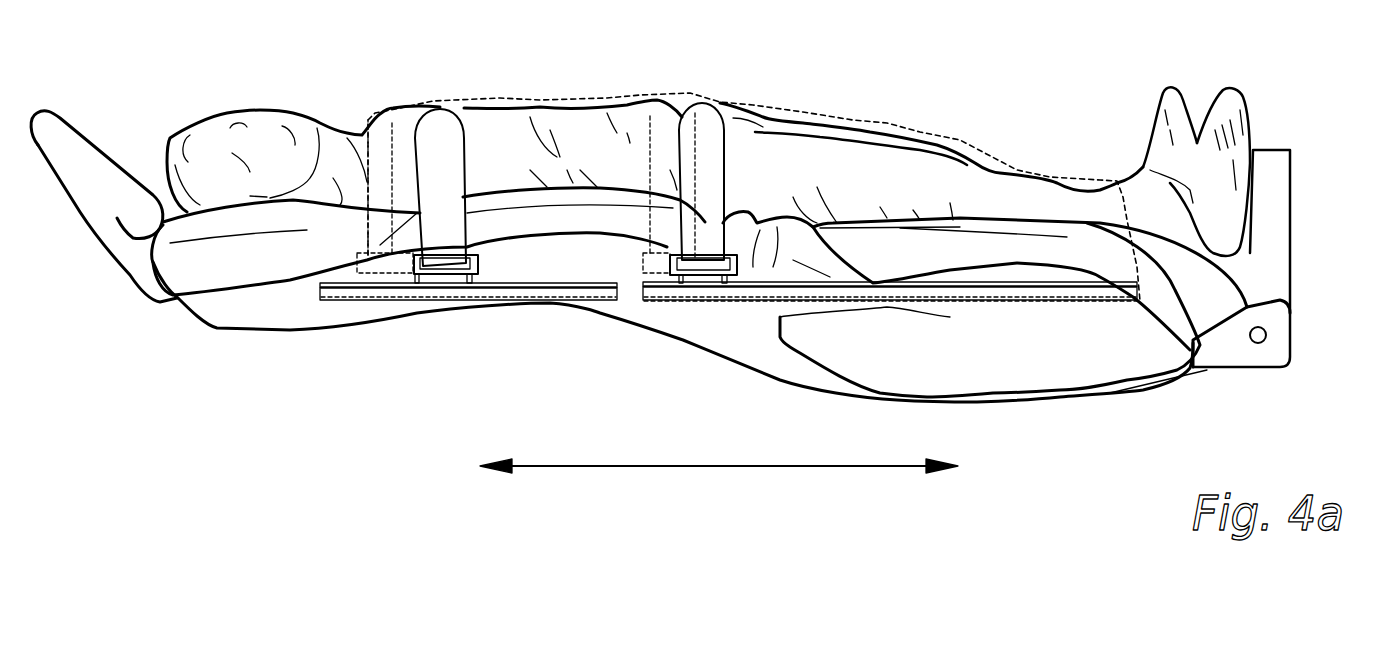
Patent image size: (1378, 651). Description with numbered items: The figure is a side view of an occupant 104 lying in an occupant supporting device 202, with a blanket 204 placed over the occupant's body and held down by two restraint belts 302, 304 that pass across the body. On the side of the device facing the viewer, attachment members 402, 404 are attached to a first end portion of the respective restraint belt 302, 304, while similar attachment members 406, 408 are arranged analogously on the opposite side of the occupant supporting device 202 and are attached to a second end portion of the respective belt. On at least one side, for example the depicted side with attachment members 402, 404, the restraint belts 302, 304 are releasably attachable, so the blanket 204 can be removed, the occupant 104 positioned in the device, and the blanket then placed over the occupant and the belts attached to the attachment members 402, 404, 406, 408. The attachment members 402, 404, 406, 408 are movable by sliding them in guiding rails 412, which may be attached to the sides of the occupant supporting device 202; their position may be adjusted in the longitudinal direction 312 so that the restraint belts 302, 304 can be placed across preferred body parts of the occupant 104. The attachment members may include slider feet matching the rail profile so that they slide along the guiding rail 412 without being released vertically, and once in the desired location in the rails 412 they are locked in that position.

The occupant 104 is at (298, 112).
The occupant supporting device 202 is at (1090, 353).
The blanket 204 is at (803, 110).
The restraint belt 302 is at (427, 110).
The restraint belt 304 is at (690, 110).
The longitudinal direction 312 is at (653, 467).
The attachment member 402 is at (447, 280).
The attachment member 404 is at (720, 282).
The attachment member 406 is at (380, 245).
The attachment member 408 is at (650, 255).
The guiding rail 412 is at (350, 293).